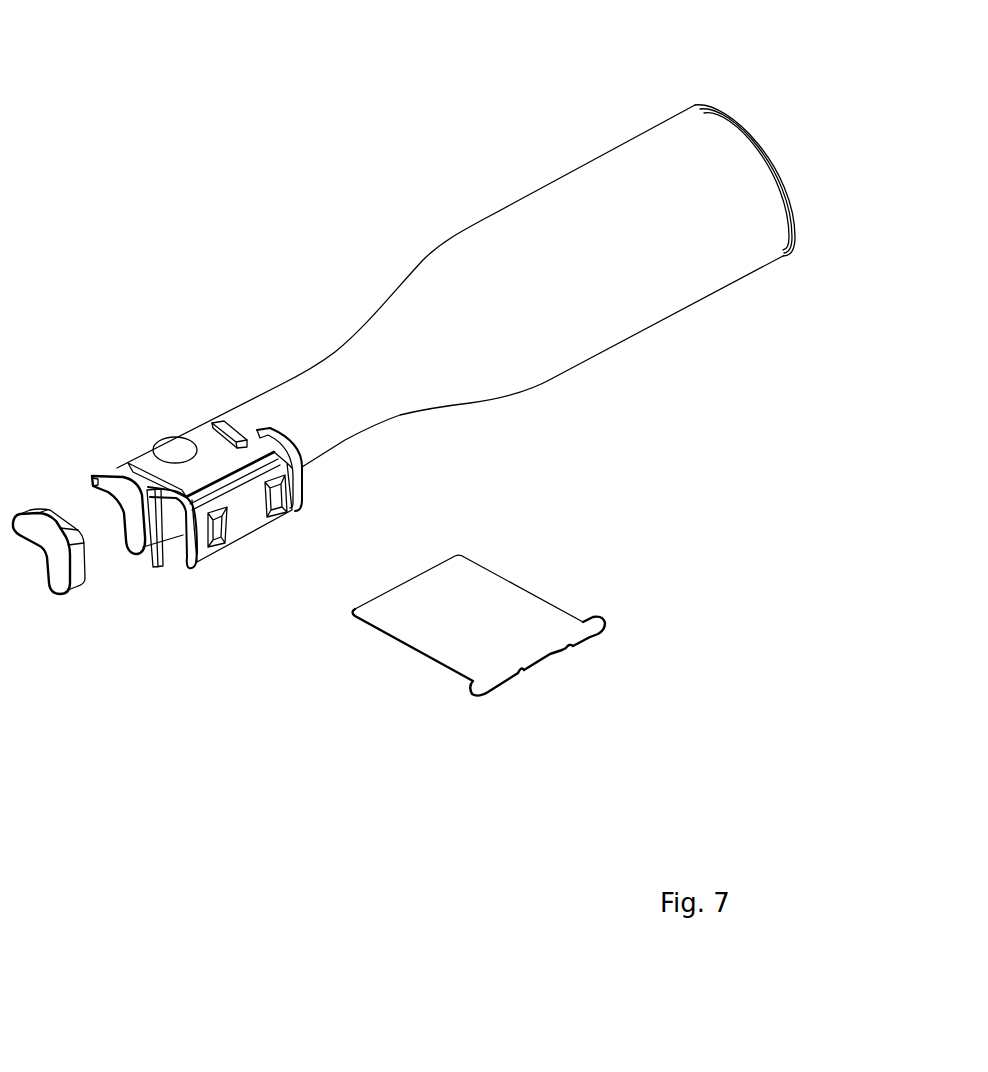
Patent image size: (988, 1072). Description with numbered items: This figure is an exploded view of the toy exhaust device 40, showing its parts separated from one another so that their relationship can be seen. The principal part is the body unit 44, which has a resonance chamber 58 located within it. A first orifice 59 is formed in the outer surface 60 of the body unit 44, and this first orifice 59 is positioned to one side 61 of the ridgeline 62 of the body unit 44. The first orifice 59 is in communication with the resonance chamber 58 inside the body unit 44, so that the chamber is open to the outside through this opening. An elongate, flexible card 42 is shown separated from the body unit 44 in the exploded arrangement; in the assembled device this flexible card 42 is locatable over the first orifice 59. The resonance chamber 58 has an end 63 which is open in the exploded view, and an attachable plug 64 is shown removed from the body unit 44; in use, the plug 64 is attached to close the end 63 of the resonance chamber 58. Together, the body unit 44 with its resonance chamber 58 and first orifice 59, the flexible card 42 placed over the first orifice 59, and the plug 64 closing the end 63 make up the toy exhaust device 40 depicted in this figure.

The toy exhaust device 40 is at (150, 108).
The elongate, flexible card 42 is at (520, 627).
The body unit 44 is at (318, 408).
The resonance chamber 58 is at (137, 535).
The first orifice 59 is at (170, 450).
The outer surface 60 is at (117, 468).
The side 61 is at (200, 432).
The ridgeline 62 is at (163, 510).
The end 63 is at (100, 487).
The attachable plug 64 is at (57, 567).